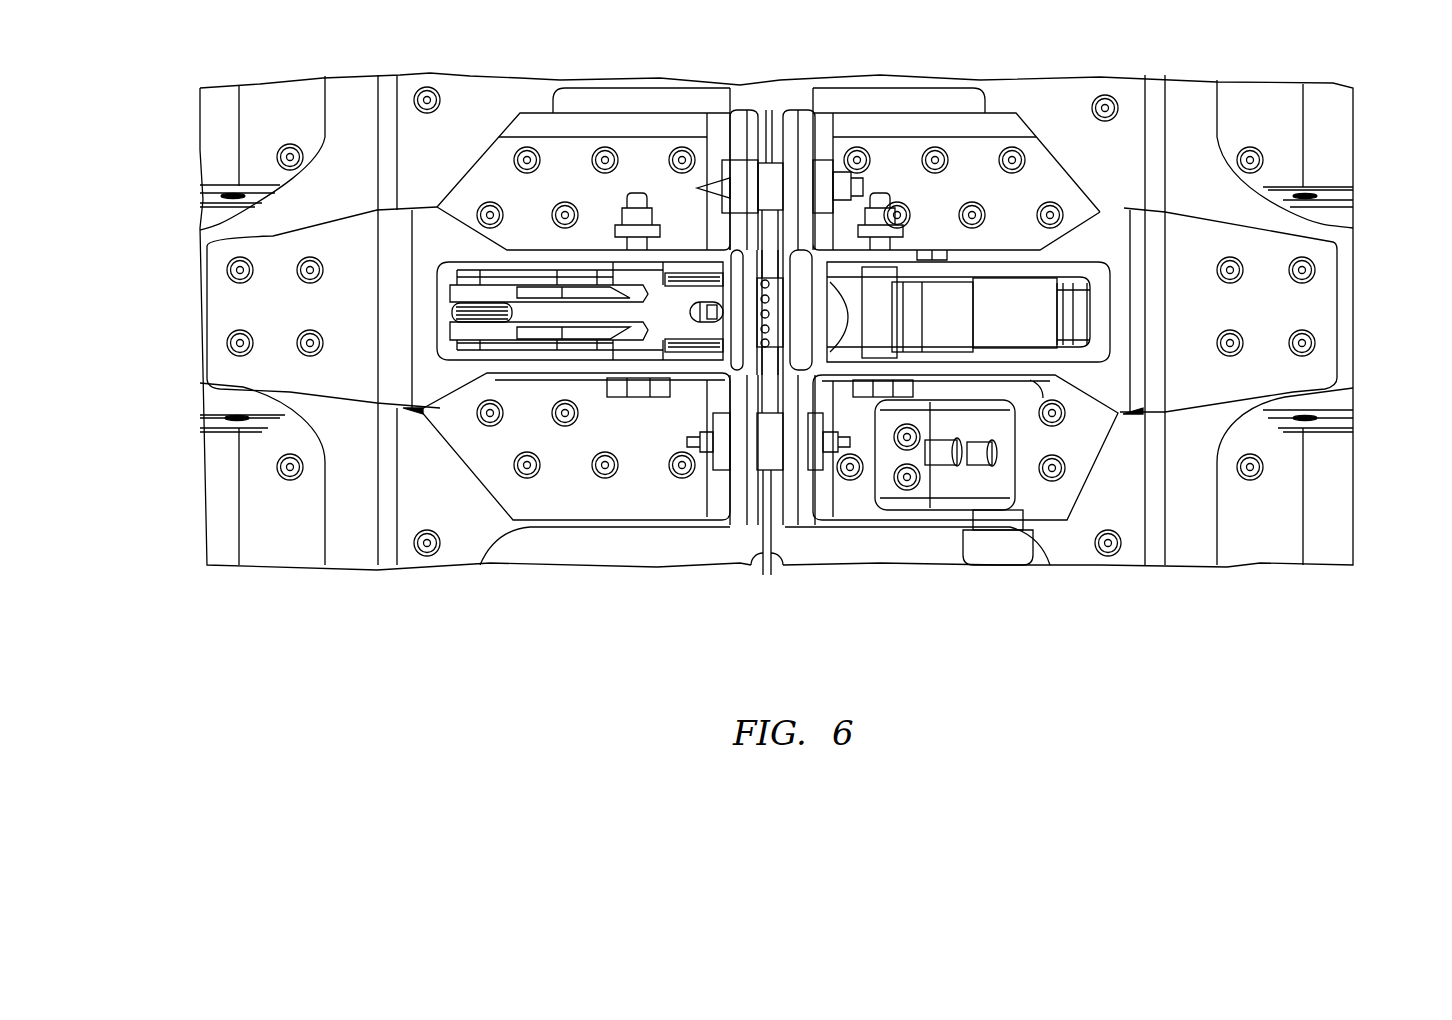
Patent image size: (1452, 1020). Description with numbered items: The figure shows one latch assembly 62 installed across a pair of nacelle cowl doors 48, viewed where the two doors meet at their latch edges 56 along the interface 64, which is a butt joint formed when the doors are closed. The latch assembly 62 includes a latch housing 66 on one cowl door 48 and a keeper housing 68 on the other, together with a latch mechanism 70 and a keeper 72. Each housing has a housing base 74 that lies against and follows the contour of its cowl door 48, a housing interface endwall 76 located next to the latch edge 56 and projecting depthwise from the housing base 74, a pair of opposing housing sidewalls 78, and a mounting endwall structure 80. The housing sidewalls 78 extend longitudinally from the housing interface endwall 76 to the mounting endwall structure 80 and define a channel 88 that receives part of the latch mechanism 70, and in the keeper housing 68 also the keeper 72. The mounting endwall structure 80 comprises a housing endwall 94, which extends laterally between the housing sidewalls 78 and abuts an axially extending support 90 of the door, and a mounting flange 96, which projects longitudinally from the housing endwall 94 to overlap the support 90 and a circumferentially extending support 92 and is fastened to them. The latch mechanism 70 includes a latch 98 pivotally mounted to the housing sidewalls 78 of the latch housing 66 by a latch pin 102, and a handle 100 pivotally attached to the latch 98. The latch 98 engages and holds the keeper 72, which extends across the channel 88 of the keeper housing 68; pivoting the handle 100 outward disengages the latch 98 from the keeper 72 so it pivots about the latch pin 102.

The cowl door 48 is at (278, 572).
The latch edge 56 is at (737, 570).
The latch assembly 62 is at (878, 88).
The interface 64 is at (767, 580).
The latch housing 66 is at (520, 105).
The keeper housing 68 is at (1044, 156).
The latch mechanism 70 is at (581, 262).
The keeper 72 is at (880, 287).
The housing base 74 is at (642, 127).
The housing interface endwall 76 is at (743, 120).
The housing sidewall 78 is at (517, 247).
The mounting endwall structure 80 is at (245, 368).
The channel 88 is at (470, 262).
The axially extending support 90 is at (385, 555).
The circumferentially extending support 92 is at (213, 217).
The housing endwall 94 is at (407, 418).
The mounting flange 96 is at (337, 377).
The latch 98 is at (676, 300).
The handle 100 is at (577, 347).
The latch pin 102 is at (642, 193).